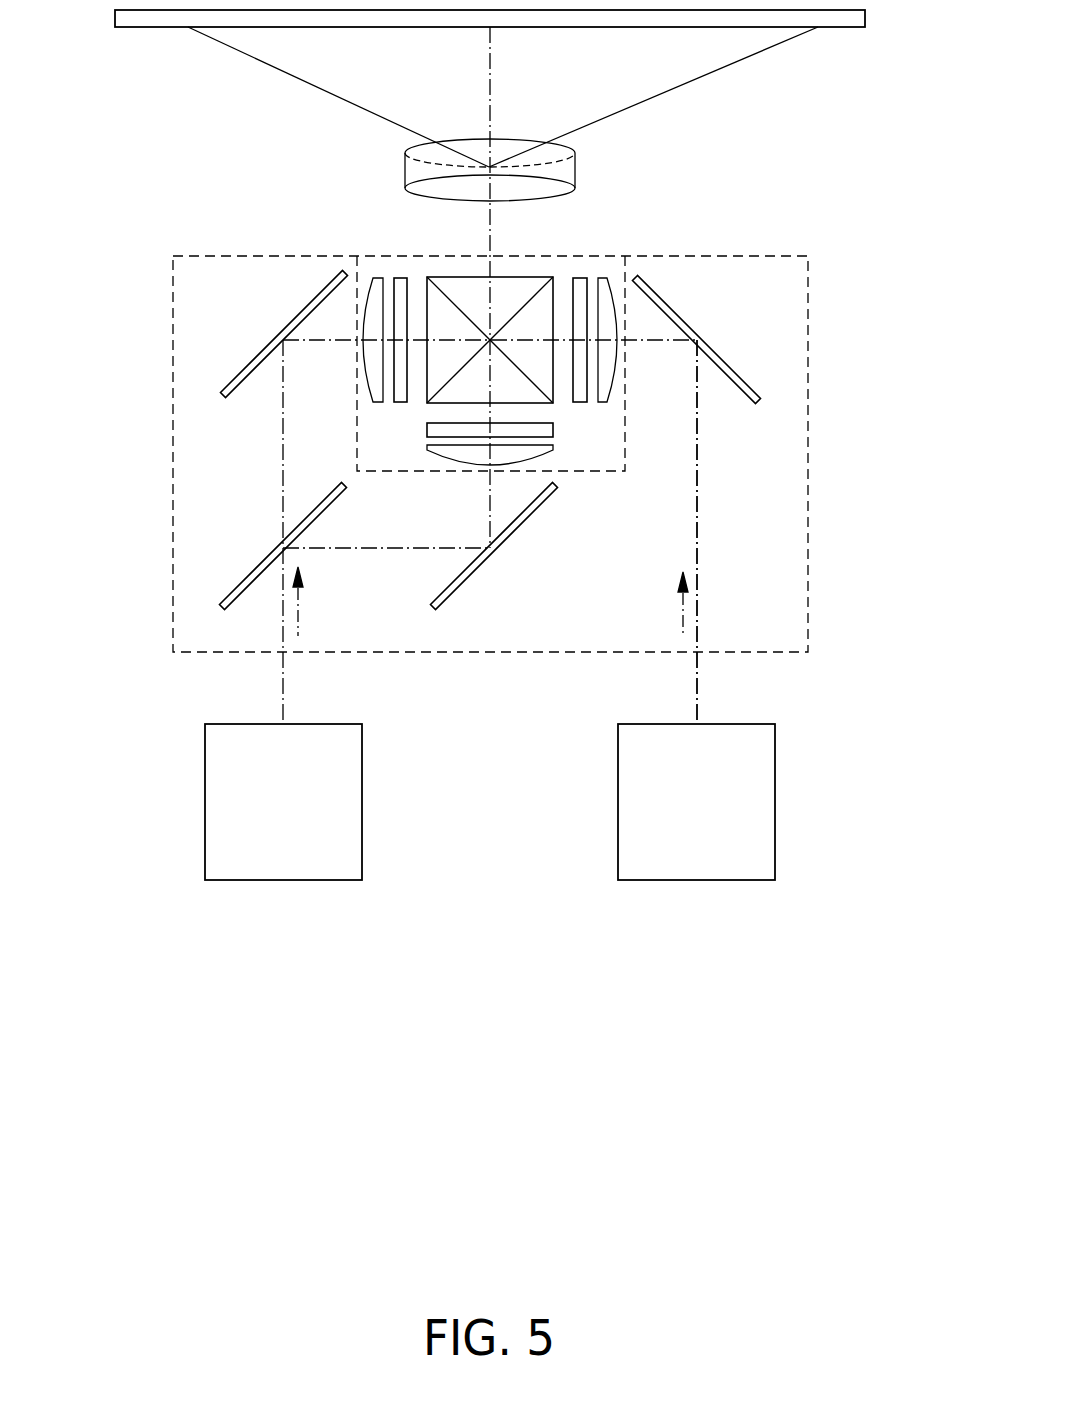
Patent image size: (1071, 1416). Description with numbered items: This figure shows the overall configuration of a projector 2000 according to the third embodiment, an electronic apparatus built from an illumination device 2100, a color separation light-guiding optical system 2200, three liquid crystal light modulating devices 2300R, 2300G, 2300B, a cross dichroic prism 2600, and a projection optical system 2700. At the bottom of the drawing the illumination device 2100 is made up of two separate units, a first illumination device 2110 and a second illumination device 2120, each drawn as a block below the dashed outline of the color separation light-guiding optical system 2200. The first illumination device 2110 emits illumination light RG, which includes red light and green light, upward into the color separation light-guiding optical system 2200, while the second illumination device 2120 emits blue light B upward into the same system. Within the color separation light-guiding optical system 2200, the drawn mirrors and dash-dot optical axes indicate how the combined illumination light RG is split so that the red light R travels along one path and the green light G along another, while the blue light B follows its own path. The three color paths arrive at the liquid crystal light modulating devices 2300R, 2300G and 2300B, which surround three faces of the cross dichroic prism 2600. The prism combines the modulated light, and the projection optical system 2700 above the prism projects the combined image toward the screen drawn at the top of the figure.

The projector 2000 is at (461, 529).
The illumination device 2100 is at (490, 886).
The first illumination device 2110 is at (283, 880).
The second illumination device 2120 is at (697, 880).
The color separation light-guiding optical system 2200 is at (421, 452).
The liquid crystal light modulating device 2300R is at (400, 287).
The liquid crystal light modulating device 2300G is at (427, 430).
The liquid crystal light modulating device 2300B is at (580, 287).
The cross dichroic prism 2600 is at (510, 293).
The projection optical system 2700 is at (405, 170).
The red light R is at (283, 476).
The green light G is at (490, 506).
The blue light B is at (683, 601).
The illumination light RG is at (298, 627).